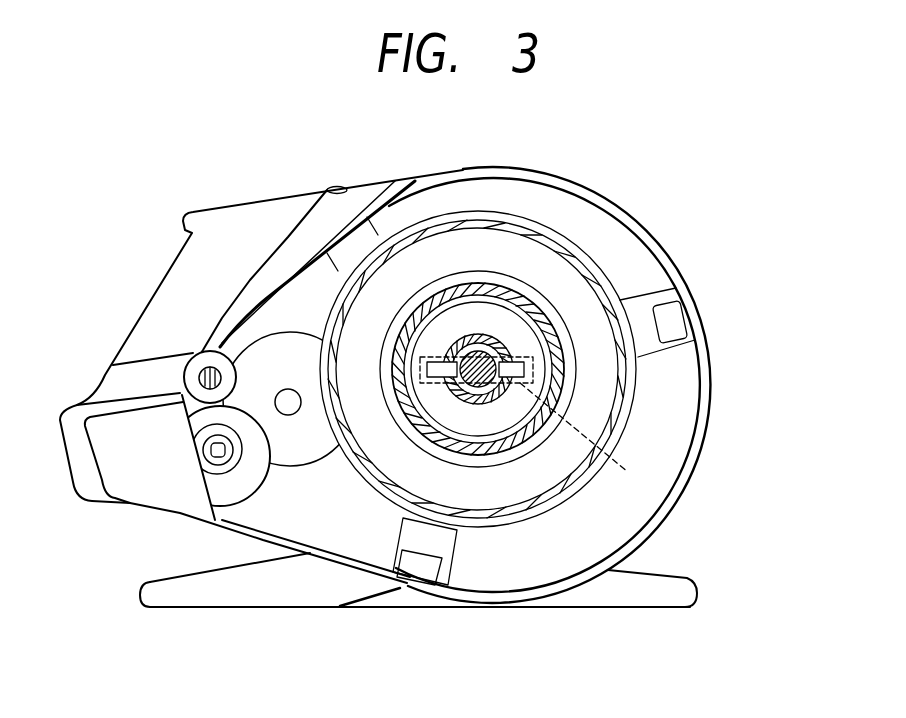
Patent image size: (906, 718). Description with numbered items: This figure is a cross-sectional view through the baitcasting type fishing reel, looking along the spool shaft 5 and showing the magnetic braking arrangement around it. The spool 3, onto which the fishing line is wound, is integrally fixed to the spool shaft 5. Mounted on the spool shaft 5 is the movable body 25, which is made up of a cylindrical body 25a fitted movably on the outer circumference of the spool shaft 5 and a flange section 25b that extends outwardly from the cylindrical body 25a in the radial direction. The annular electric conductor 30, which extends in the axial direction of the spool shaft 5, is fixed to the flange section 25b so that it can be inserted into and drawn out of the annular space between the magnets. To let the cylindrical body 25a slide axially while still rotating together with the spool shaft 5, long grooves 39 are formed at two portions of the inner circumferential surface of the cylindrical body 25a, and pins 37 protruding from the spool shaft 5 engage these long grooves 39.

The spool 3 is at (583, 260).
The spool shaft 5 is at (476, 352).
The movable body 25 is at (495, 320).
The cylindrical body 25a is at (482, 400).
The flange section 25b is at (420, 440).
The annular electric conductor 30 is at (535, 378).
The pins 37 is at (510, 357).
The long grooves 39 is at (583, 442).